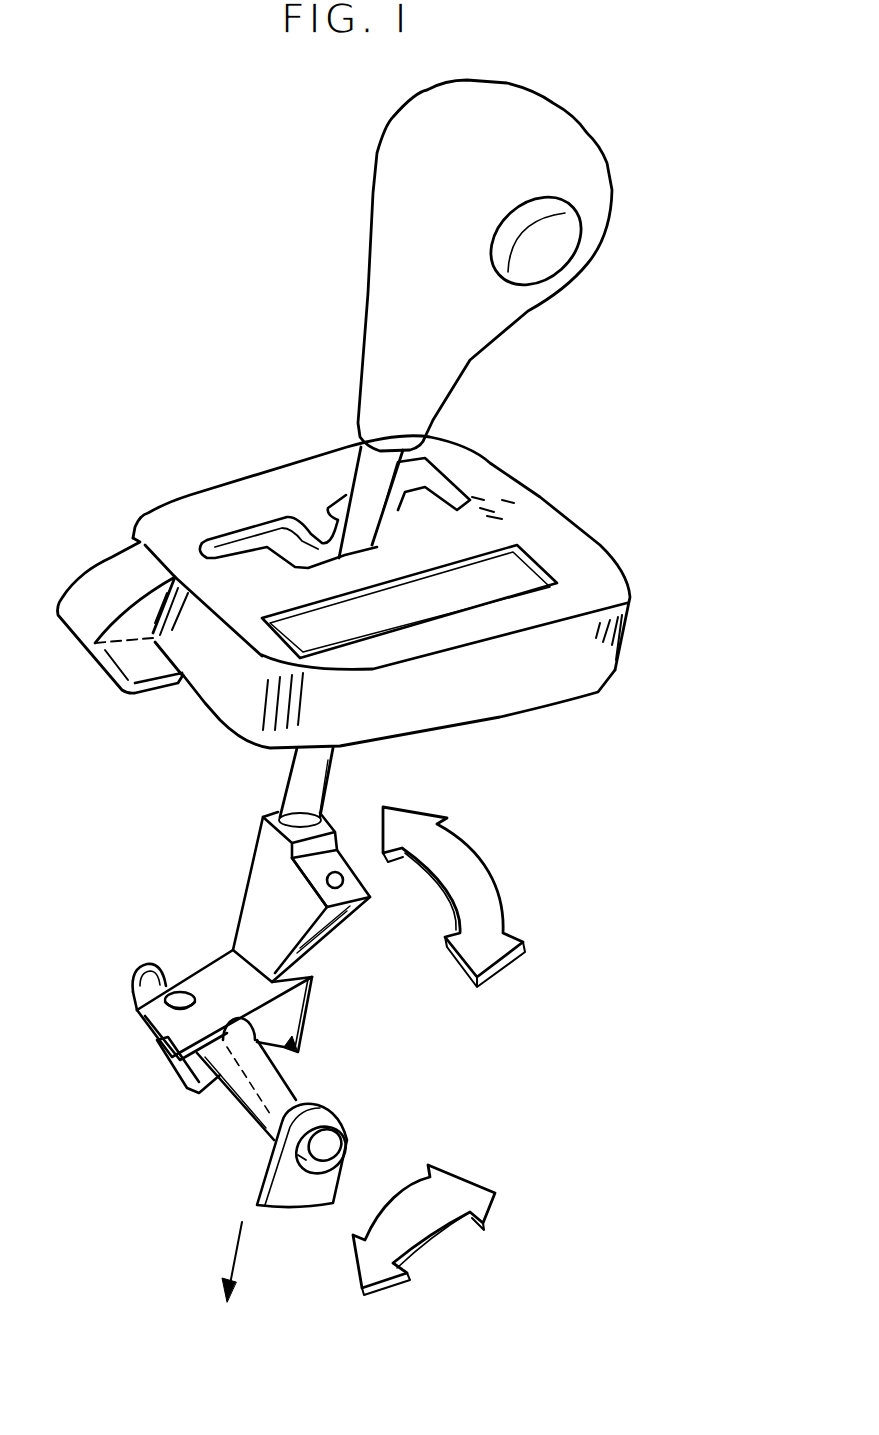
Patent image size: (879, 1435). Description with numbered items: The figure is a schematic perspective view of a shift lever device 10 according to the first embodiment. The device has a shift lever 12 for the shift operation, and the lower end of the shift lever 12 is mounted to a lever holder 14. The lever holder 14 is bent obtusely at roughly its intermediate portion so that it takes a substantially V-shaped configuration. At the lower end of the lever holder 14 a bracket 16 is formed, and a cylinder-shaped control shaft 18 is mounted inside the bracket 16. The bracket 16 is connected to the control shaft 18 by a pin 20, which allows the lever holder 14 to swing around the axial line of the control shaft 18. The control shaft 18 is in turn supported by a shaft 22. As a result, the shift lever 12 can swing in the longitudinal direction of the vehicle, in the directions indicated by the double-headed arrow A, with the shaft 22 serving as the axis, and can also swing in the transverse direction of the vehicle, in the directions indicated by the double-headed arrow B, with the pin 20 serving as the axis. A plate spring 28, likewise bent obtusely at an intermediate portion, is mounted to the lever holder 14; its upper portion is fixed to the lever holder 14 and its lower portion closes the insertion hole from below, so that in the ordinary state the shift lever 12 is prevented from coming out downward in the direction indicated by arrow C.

The shift lever device 10 is at (200, 380).
The shift lever 12 is at (360, 473).
The lever holder 14 is at (243, 913).
The bracket 16 is at (140, 1028).
The control shaft 18 is at (145, 963).
The pin 20 is at (182, 995).
The shaft 22 is at (277, 1078).
The plate spring 28 is at (312, 1015).
The double-headed arrow A is at (415, 1225).
The double-headed arrow B is at (497, 887).
The arrow C is at (238, 1240).